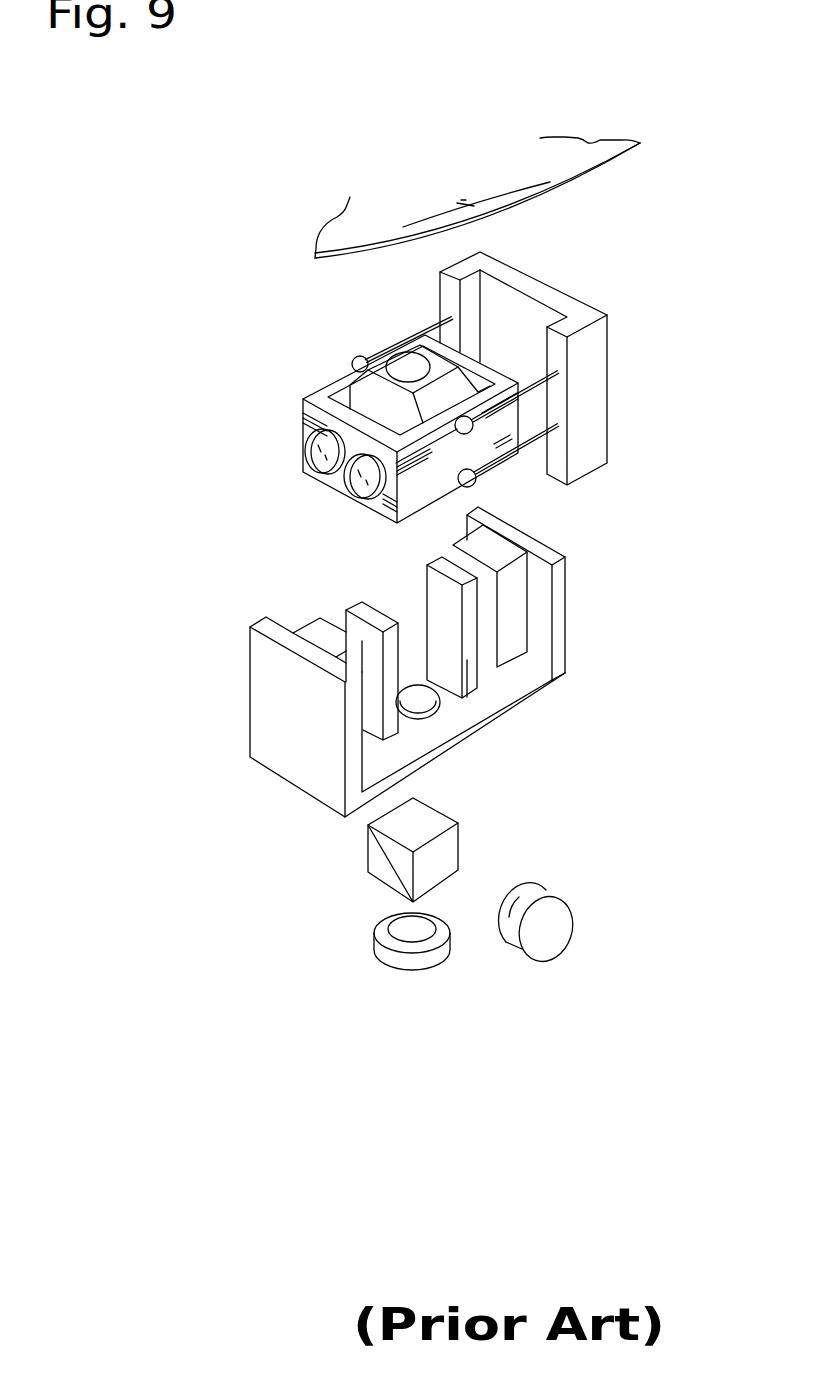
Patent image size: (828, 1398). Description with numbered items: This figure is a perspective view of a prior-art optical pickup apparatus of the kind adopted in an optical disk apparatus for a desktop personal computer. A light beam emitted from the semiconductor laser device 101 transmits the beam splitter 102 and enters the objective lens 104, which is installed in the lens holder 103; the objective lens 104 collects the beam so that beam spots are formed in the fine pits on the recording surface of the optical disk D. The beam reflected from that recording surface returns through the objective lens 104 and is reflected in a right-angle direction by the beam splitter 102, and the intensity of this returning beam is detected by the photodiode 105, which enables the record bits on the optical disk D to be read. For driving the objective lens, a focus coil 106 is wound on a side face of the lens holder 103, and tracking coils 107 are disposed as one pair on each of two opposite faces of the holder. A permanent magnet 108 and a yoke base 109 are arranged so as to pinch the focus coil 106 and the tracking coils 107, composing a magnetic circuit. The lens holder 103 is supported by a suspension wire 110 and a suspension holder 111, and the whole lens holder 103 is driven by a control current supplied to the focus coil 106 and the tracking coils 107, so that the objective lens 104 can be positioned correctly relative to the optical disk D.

The optical disk D is at (570, 171).
The semiconductor laser device 101 is at (384, 950).
The beam splitter 102 is at (448, 862).
The lens holder 103 is at (320, 394).
The objective lens 104 is at (408, 370).
The photodiode 105 is at (550, 940).
The focus coil 106 is at (422, 472).
The tracking coils 107 is at (355, 472).
The permanent magnet 108 is at (317, 634).
The yoke base 109 is at (400, 738).
The suspension wire 110 is at (437, 327).
The suspension holder 111 is at (556, 297).